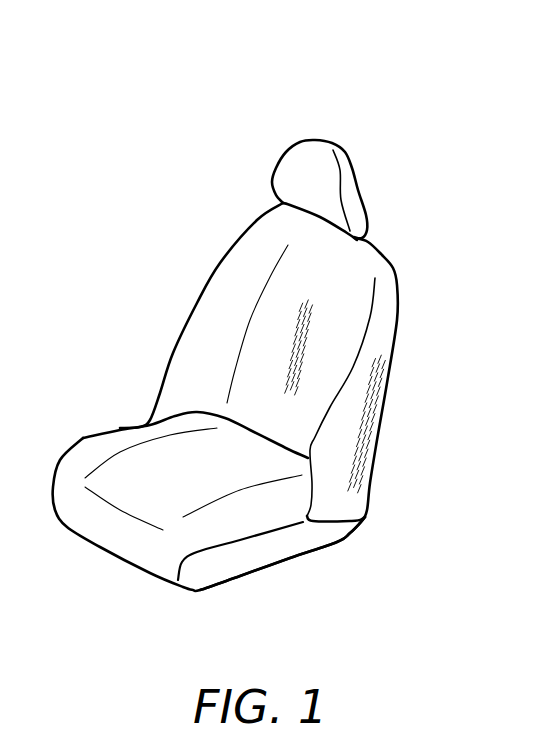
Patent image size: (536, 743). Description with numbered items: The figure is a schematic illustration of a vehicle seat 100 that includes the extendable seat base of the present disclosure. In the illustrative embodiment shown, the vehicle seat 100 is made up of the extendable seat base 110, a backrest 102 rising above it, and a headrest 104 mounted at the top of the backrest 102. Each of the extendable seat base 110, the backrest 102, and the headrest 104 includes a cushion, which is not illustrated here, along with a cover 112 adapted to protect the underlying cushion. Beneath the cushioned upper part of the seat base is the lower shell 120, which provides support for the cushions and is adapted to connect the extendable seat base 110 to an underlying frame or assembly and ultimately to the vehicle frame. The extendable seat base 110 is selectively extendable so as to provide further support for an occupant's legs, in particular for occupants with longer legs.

The vehicle seat 100 is at (366, 121).
The backrest 102 is at (217, 313).
The headrest 104 is at (353, 217).
The extendable seat base 110 is at (87, 448).
The cover 112 is at (203, 557).
The lower shell 120 is at (307, 542).